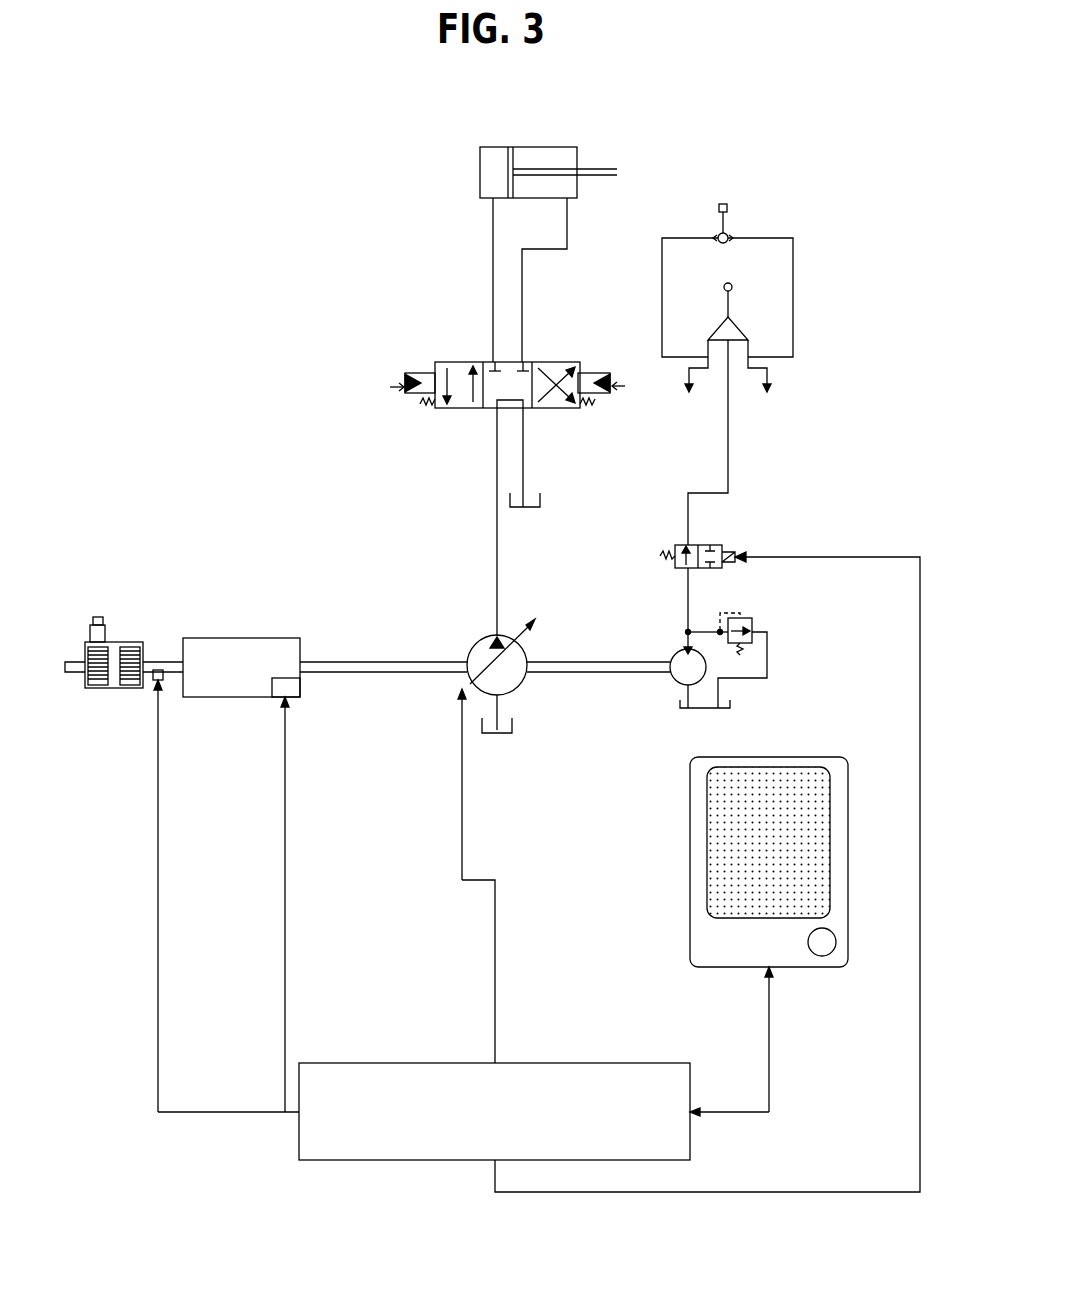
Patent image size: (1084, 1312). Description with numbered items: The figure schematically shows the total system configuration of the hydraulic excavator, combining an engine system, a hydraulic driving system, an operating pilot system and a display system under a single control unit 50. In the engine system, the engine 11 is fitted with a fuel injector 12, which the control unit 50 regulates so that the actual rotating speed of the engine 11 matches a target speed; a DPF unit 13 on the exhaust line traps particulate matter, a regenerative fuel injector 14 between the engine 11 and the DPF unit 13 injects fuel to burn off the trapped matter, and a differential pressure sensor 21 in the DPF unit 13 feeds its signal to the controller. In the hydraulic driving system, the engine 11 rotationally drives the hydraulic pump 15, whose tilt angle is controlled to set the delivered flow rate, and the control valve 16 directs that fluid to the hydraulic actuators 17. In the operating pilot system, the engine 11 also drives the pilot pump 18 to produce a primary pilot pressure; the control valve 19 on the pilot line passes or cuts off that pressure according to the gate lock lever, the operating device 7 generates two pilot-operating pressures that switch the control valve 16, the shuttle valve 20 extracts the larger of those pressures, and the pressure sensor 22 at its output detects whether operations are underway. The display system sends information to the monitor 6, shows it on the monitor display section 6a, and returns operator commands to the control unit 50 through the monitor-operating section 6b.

The monitor 6 is at (793, 909).
The monitor display section 6a is at (830, 838).
The monitor-operating section 6b is at (835, 931).
The operating device 7 is at (738, 325).
The engine 11 is at (217, 698).
The fuel injector 12 is at (301, 697).
The diesel particulate filter (DPF) unit 13 is at (92, 690).
The regenerative fuel injector 14 is at (152, 683).
The hydraulic pump 15 is at (470, 651).
The control valve 16 is at (572, 362).
The hydraulic actuators 17 is at (497, 149).
The pilot pump 18 is at (680, 684).
The control valve 19 is at (720, 570).
The shuttle valve 20 is at (737, 232).
The differential pressure sensor 21 is at (96, 615).
The pressure sensor 22 is at (718, 203).
The control unit 50 is at (318, 1160).